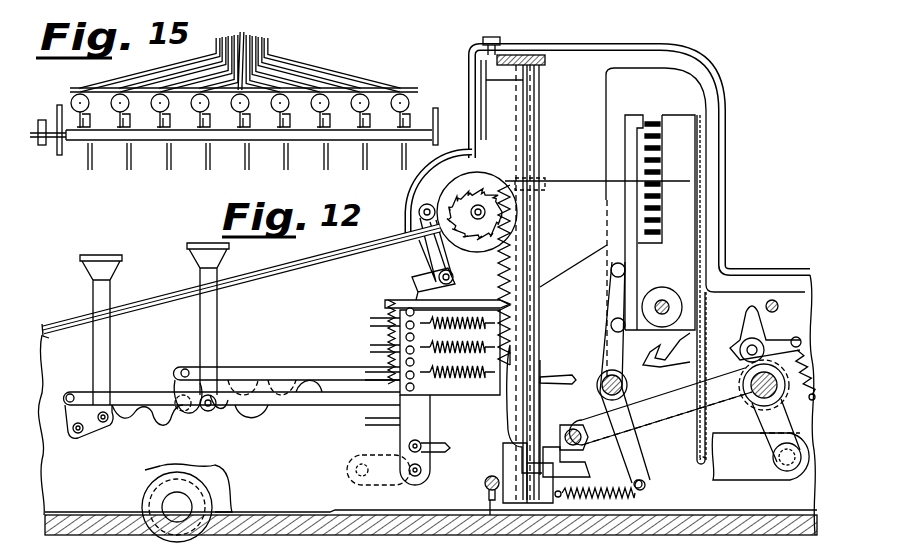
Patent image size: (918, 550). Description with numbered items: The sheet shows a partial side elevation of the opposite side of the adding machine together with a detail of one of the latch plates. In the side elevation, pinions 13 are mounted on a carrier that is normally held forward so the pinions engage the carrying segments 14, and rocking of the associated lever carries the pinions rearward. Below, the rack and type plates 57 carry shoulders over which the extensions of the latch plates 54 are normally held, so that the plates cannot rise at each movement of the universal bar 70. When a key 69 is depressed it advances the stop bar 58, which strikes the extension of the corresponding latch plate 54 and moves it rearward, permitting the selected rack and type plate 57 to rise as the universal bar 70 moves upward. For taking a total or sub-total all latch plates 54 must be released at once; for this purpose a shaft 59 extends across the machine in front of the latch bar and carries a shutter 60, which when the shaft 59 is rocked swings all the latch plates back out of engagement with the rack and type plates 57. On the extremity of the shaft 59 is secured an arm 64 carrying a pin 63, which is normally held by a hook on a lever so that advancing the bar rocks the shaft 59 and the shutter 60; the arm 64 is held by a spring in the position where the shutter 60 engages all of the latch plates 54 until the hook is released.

In FIG. 12, the pinions 13 is at (485, 190).
In FIG. 12, the carrying segments 14 is at (436, 206).
In FIG. 15, the latch plates 54 is at (128, 128).
In FIG. 12, the latch plates 54 is at (522, 492).
In FIG. 12, the rack and type plates 57 is at (541, 282).
In FIG. 12, the stop bar 58 is at (300, 366).
In FIG. 15, the shaft 59 is at (72, 141).
In FIG. 12, the shaft 59 is at (485, 483).
In FIG. 12, the shutter 60 is at (488, 500).
In FIG. 15, the pin 63 is at (38, 138).
In FIG. 15, the arm 64 is at (42, 120).
In FIG. 12, the key 69 is at (218, 305).
In FIG. 12, the universal bar 70 is at (573, 428).